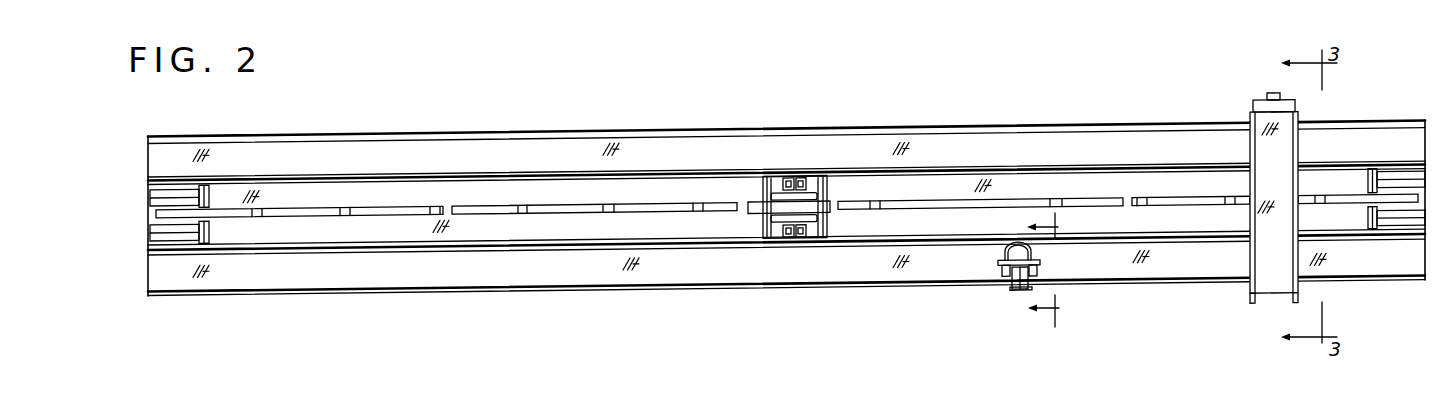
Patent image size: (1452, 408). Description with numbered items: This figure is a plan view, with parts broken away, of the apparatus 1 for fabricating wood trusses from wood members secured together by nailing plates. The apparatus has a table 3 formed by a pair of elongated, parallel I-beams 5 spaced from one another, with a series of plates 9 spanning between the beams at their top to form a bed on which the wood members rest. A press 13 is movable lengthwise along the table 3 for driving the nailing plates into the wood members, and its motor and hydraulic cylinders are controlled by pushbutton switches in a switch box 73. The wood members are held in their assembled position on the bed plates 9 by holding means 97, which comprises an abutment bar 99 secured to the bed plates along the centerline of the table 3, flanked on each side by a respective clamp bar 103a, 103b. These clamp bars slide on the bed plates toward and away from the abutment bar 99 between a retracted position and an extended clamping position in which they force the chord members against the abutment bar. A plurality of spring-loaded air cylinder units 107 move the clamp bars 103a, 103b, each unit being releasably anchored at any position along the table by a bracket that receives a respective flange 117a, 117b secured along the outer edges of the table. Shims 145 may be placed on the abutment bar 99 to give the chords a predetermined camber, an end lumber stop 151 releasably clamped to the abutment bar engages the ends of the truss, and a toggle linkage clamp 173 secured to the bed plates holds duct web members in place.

The apparatus 1 is at (786, 241).
The table 3 is at (786, 308).
The plates 9 is at (786, 288).
The press 13 is at (1255, 232).
The switch box 73 is at (1261, 78).
The means for holding wood members 97 is at (786, 138).
The abutment bar 99 is at (841, 154).
The clamp bar 103a is at (786, 283).
The clamp bar 103b is at (786, 140).
The air cylinder units 107 is at (986, 291).
The flange 117a is at (786, 303).
The flange 117b is at (786, 108).
The shims 145 is at (787, 143).
The end lumber stop 151 is at (787, 209).
The toggle linkage clamp 173 is at (824, 159).
The I-beams 5 is at (1050, 269).